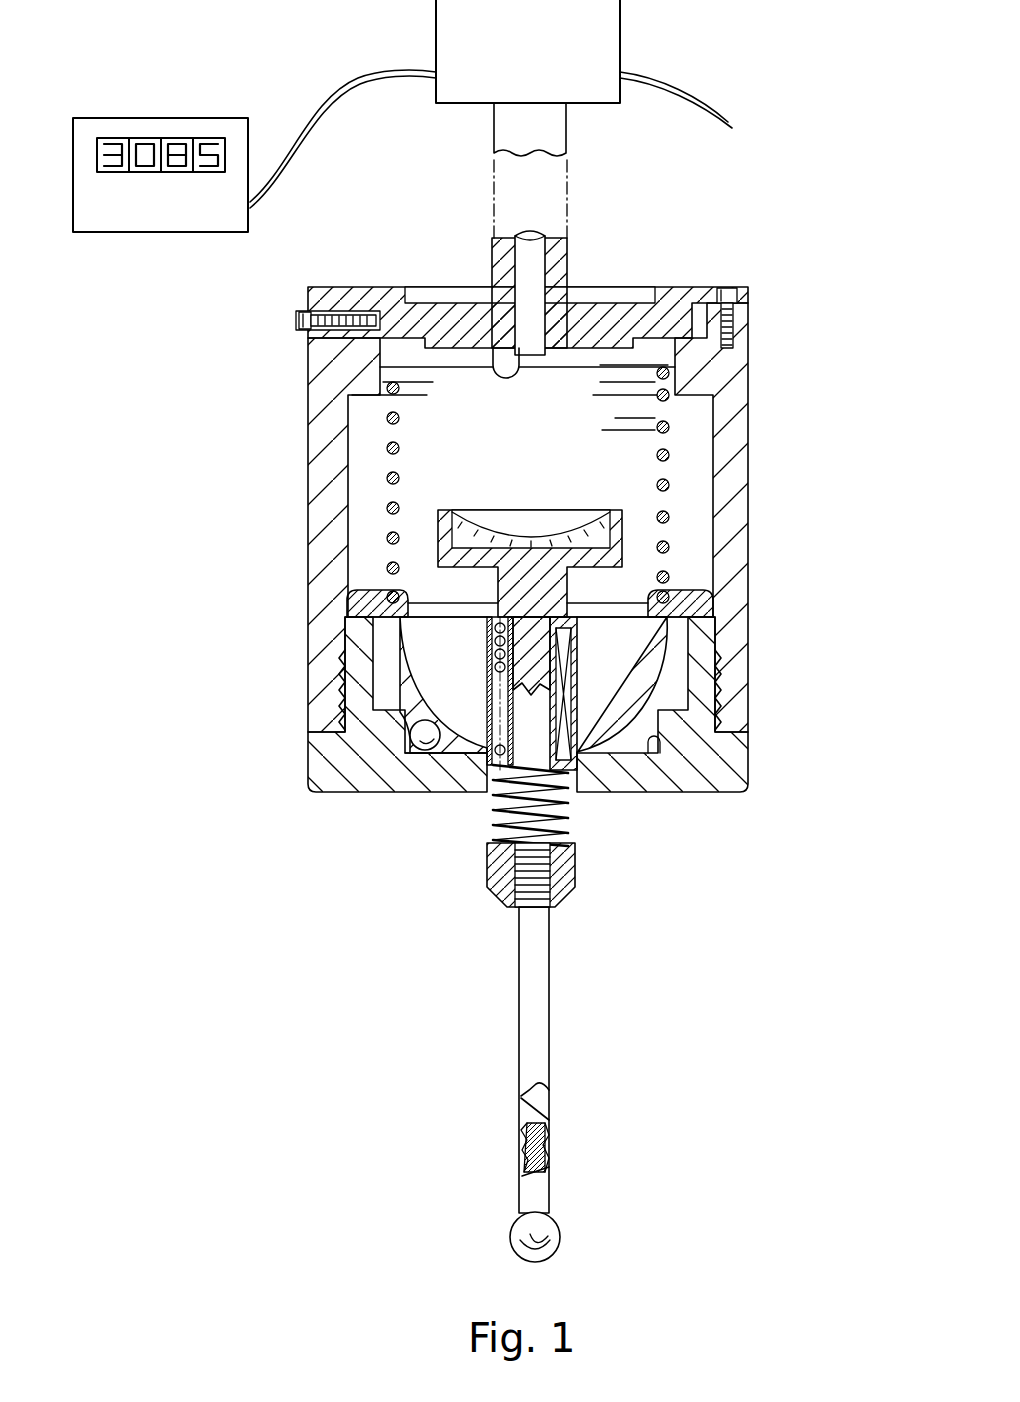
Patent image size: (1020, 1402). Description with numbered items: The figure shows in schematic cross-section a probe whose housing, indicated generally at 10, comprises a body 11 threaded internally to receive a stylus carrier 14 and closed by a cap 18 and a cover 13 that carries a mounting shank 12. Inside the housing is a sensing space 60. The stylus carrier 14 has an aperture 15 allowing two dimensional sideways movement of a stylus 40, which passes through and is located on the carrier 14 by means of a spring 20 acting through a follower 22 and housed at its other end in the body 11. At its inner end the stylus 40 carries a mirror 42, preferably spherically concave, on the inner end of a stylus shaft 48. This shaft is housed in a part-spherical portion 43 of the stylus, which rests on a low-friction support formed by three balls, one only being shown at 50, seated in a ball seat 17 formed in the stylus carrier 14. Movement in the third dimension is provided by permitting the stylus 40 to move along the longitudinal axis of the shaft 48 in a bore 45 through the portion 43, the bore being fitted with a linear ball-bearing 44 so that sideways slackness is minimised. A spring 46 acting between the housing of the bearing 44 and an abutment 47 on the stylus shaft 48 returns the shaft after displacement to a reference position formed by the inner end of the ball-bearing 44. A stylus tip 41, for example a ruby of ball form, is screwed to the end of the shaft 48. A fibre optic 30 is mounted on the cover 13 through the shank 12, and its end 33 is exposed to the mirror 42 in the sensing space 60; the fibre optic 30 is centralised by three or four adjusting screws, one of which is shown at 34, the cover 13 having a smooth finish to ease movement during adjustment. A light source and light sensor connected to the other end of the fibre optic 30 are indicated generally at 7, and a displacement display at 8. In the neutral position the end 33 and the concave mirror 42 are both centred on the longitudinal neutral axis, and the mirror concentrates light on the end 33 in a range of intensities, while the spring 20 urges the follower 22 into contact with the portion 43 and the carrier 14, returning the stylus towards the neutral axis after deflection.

The light source and light sensor 7 is at (620, 44).
The displacement display 8 is at (178, 116).
The housing 10 is at (272, 541).
The body 11 is at (318, 486).
The mounting shank 12 is at (568, 268).
The cover 13 is at (630, 310).
The stylus carrier 14 is at (712, 780).
The aperture 15 is at (622, 760).
The ball seat 17 is at (655, 758).
The cap 18 is at (685, 292).
The spring 20 is at (388, 447).
The follower 22 is at (356, 596).
The fibre optic 30 is at (518, 238).
The end of fibre optic 33 is at (498, 372).
The adjusting screw 34 is at (300, 320).
The stylus 40 is at (553, 987).
The stylus tip 41 is at (520, 1238).
The mirror 42 is at (495, 530).
The part-spherical portion 43 is at (395, 672).
The linear ball-bearing 44 is at (470, 640).
The bore 45 is at (442, 755).
The spring 46 is at (576, 822).
The abutment 47 is at (566, 882).
The stylus shaft 48 is at (527, 952).
The ball 50 is at (408, 735).
The sensing space 60 is at (594, 459).